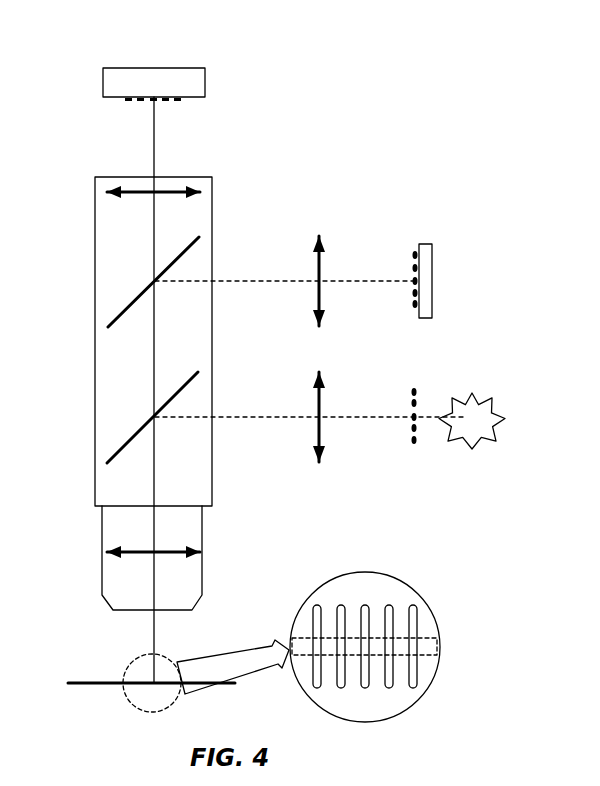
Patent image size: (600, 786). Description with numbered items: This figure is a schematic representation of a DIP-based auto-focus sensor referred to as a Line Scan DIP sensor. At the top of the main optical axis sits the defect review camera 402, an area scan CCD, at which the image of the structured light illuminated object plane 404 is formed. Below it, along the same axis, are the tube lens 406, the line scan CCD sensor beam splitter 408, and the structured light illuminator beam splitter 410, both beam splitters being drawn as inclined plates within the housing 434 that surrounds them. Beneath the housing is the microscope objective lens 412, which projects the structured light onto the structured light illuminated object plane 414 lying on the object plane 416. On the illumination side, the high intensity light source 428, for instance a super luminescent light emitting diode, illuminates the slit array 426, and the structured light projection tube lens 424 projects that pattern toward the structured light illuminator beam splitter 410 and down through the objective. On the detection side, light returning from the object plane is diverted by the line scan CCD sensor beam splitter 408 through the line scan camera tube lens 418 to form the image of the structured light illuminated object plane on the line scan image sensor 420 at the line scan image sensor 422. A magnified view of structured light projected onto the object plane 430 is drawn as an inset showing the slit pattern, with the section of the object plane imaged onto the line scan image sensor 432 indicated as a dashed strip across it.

The defect review camera 402 is at (152, 68).
The image of the structured light illuminated object plane 404 is at (128, 102).
The tube lens 406 is at (140, 196).
The line scan CCD sensor beam splitter 408 is at (153, 281).
The structured light illuminator beam splitter 410 is at (153, 417).
The microscope objective lens 412 is at (140, 552).
The structured light illuminated object plane 414 is at (150, 681).
The object plane 416 is at (90, 685).
The line scan camera tube lens 418 is at (318, 264).
The image of the structured light illuminated object plane on the line scan image se 420 is at (411, 272).
The line scan image sensor 422 is at (432, 280).
The structured light projection tube lens 424 is at (316, 432).
The slit array 426 is at (414, 445).
The high intensity light source 428 is at (473, 437).
The magnified view of structured light projected onto the object plane 430 is at (403, 583).
The section of the object plane imaged onto the line scan image sensor 432 is at (437, 648).
The beam splitter housing 434 is at (212, 345).